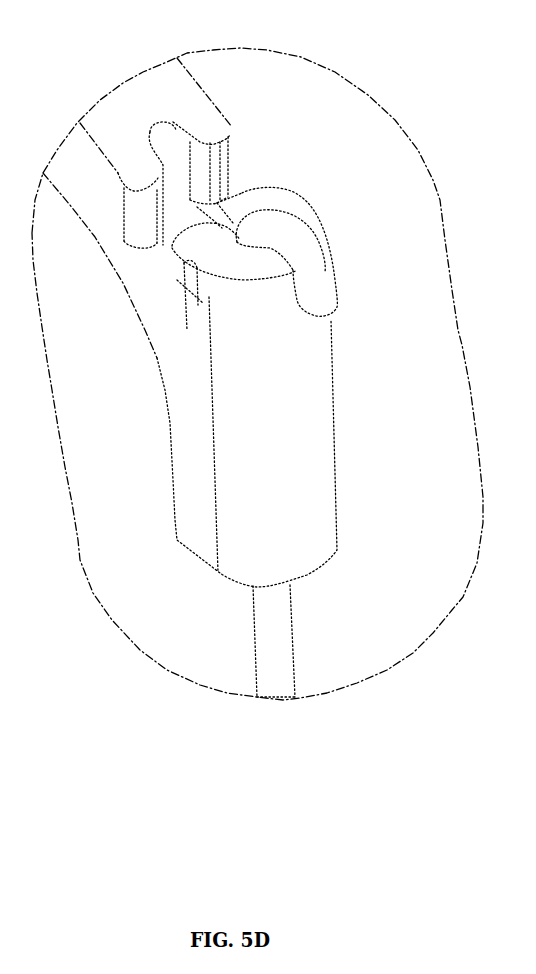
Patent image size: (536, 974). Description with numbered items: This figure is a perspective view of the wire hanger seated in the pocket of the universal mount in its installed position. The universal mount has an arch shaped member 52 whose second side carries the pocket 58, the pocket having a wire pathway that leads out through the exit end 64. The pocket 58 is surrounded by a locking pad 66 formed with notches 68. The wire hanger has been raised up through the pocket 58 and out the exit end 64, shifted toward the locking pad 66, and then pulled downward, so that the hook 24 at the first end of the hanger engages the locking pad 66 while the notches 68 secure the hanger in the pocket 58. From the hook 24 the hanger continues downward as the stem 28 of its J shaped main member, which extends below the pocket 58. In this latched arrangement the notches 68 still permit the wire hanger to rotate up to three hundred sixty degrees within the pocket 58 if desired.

The arch shaped member 52 is at (118, 120).
The pocket 58 is at (173, 157).
The hook 24 is at (313, 275).
The exit end 64 is at (213, 262).
The notches 68 is at (188, 248).
The locking pad 66 is at (293, 455).
The stem 28 is at (280, 643).